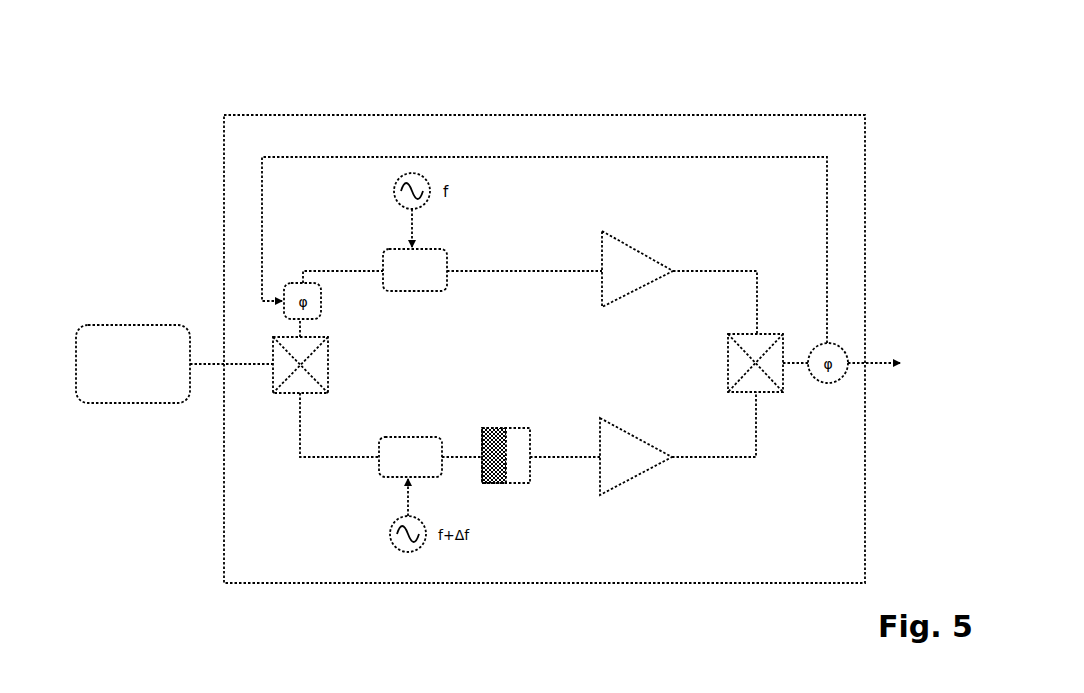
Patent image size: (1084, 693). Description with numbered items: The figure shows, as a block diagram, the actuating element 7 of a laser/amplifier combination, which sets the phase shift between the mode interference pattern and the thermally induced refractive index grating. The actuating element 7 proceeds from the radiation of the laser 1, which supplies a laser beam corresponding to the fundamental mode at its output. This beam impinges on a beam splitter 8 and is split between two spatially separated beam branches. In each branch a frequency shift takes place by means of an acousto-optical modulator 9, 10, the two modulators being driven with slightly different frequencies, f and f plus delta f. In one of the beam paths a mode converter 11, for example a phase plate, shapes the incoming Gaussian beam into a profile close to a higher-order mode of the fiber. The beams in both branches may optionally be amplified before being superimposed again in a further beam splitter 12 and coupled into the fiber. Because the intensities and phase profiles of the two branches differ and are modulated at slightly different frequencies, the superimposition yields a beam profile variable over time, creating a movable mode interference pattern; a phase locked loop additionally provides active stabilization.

The laser 1 is at (138, 337).
The actuating element 7 is at (547, 115).
The beam splitter 8 is at (328, 365).
The acousto-optical modulator 9 is at (410, 292).
The acousto-optical modulator 10 is at (405, 435).
The mode converter 11 is at (502, 427).
The further beam splitter 12 is at (730, 364).